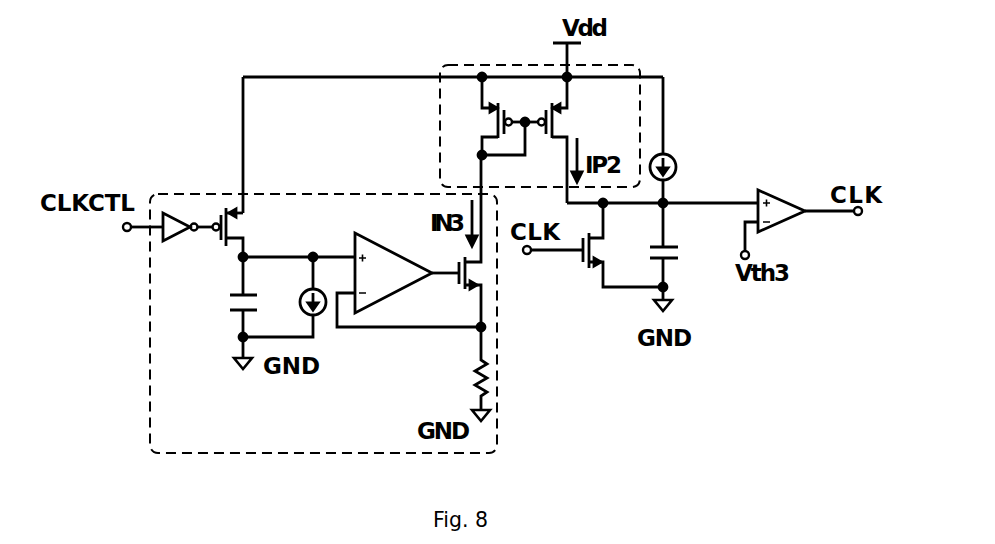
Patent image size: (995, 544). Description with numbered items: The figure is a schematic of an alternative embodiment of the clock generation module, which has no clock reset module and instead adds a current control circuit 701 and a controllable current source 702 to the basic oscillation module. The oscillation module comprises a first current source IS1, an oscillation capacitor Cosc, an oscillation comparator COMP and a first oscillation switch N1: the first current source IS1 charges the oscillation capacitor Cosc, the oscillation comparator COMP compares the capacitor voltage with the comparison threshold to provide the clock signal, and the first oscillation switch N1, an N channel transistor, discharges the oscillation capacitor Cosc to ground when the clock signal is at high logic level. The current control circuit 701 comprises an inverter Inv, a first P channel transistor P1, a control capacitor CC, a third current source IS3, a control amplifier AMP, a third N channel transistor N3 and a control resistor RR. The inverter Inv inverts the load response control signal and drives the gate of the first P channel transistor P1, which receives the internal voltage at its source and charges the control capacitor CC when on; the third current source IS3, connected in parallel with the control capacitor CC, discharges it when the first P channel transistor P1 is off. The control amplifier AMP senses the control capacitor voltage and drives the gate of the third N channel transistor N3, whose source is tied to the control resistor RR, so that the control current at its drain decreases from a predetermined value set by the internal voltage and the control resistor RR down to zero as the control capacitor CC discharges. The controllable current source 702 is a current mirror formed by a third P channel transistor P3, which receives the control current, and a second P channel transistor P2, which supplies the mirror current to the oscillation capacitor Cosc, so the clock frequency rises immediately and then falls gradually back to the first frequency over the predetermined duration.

The current control circuit 701 is at (299, 194).
The controllable current source 702 is at (623, 65).
The inverter Inv is at (186, 240).
The first P channel transistor P1 is at (247, 232).
The control capacitor CC is at (227, 307).
The third current source IS3 is at (284, 297).
The control amplifier AMP is at (407, 273).
The third N channel transistor N3 is at (455, 241).
The control resistor RR is at (460, 368).
The third P channel transistor P3 is at (494, 116).
The second P channel transistor P2 is at (569, 140).
The first current source IS1 is at (684, 140).
The oscillation capacitor Cosc is at (689, 251).
The first oscillation switch N1 is at (597, 245).
The oscillation comparator COMP is at (798, 207).